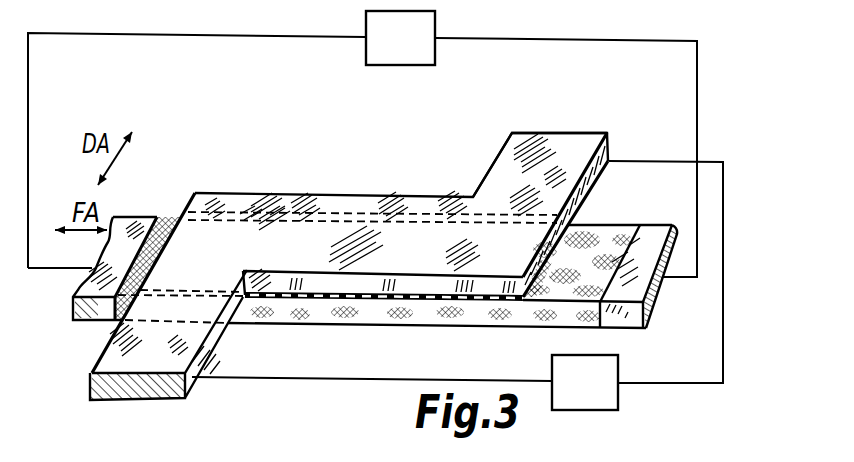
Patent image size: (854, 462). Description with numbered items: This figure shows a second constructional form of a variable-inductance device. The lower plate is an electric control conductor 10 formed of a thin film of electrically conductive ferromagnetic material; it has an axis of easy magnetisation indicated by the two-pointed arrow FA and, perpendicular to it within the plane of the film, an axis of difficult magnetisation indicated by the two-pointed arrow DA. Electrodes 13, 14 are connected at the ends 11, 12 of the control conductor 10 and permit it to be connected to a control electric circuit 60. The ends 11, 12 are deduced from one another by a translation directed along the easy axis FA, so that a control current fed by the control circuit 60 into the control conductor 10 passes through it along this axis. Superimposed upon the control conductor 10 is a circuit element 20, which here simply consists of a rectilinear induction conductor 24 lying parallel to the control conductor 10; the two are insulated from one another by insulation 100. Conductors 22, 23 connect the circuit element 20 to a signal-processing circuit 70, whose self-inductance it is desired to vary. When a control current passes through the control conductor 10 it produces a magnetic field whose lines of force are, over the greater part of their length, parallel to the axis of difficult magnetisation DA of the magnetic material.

The control conductor 10 is at (396, 310).
The insulation 100 is at (312, 303).
The end 11 is at (167, 223).
The end 12 is at (592, 230).
The electrode 13 is at (135, 226).
The electrode 14 is at (652, 233).
The circuit element 20 is at (422, 180).
The conductor 22 is at (118, 358).
The conductor 23 is at (507, 170).
The induction conductor 24 is at (257, 203).
The control electric circuit 60 is at (362, 144).
The signal-processing circuit 70 is at (457, 285).